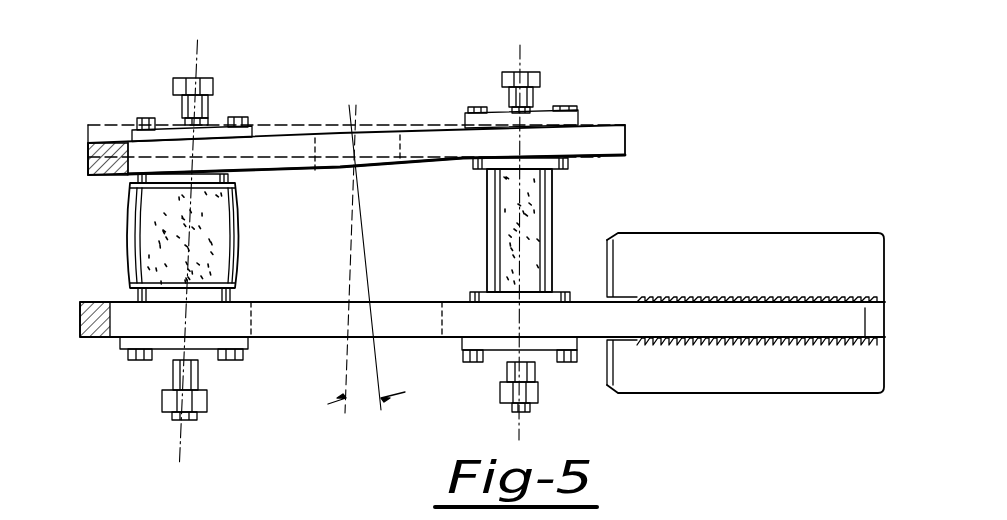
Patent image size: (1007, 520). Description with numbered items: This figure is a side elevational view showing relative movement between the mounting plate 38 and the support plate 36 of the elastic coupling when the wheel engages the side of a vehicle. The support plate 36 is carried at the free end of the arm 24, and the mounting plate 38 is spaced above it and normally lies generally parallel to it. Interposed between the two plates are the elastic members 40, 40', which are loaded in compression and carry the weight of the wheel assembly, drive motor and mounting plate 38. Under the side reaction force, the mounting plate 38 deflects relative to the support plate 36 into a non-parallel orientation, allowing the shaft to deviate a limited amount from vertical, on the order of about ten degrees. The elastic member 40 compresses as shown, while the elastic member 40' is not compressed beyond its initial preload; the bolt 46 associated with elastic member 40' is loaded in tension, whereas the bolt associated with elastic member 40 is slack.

The arm 24 is at (786, 231).
The support plate 36 is at (583, 302).
The mounting plate 38 is at (626, 141).
The elastic member 40 is at (138, 238).
The elastic member 40' is at (558, 230).
The bolt 46 is at (540, 79).